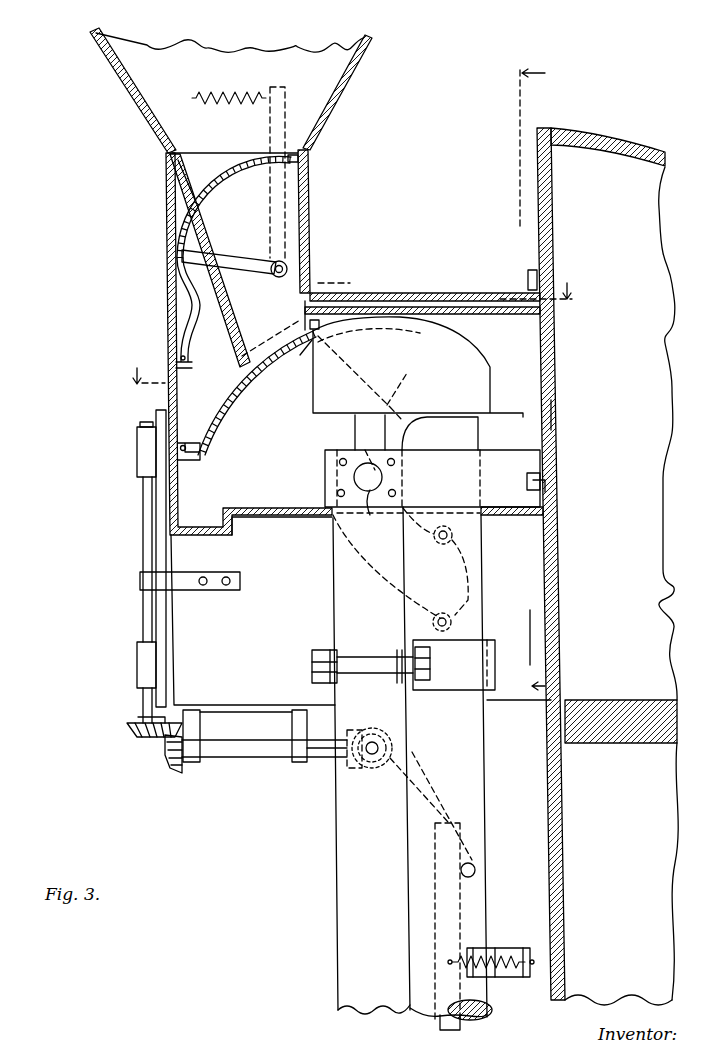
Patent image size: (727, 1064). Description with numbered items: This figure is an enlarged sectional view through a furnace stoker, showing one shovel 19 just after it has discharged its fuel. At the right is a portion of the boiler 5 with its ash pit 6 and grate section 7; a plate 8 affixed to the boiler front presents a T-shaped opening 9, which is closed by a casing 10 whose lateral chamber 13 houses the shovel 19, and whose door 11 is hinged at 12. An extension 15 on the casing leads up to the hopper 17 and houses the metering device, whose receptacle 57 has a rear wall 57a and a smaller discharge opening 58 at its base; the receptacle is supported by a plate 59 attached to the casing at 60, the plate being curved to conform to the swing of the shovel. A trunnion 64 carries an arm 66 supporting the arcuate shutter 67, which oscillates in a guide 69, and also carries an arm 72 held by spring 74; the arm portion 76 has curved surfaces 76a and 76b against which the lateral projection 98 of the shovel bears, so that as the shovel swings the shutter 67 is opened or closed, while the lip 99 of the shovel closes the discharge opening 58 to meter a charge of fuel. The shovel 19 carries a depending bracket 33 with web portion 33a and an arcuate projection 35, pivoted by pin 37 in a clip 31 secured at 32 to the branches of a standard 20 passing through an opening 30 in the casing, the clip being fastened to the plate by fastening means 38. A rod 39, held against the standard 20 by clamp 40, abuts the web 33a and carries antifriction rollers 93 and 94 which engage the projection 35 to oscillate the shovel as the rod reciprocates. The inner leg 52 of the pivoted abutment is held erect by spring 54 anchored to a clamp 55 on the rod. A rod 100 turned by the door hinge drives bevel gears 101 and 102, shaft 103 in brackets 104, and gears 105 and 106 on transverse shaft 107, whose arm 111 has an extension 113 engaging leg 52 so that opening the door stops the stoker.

The boiler 5 is at (626, 150).
The ash pit 6 is at (621, 874).
The grate section 7 is at (615, 705).
The plate 8 is at (560, 608).
The T-shaped opening 9 is at (553, 420).
The casing 10 is at (253, 620).
The door 11 is at (156, 512).
The hinge 12 is at (137, 665).
The lateral chamber 13 is at (553, 366).
The extension 15 is at (312, 192).
The hopper 17 is at (125, 86).
The shovel 19 is at (455, 350).
The standard 20 is at (350, 936).
The opening 30 is at (333, 520).
The clip 31 is at (495, 460).
The fastening 32 is at (396, 468).
The depending bracket 33 is at (356, 436).
The web portion 33a is at (418, 425).
The arcuately shaped projection 35 is at (372, 578).
The pin 37 is at (365, 493).
The fastening means 38 is at (548, 488).
The rod 39 is at (480, 770).
The clamp 40 is at (485, 650).
The inner leg 52 is at (448, 1025).
The spring 54 is at (512, 945).
The clamp 55 is at (513, 980).
The receptacle portion 57 is at (211, 260).
The rear wall 57a is at (196, 160).
The discharge opening 58 is at (268, 362).
The plate 59 is at (430, 300).
The attachment 60 is at (202, 455).
The trunnion 64 is at (290, 270).
The arm 66 is at (252, 276).
The arcuate shutter 67 is at (185, 232).
The guide 69 is at (215, 175).
The arm 72 is at (290, 117).
The spring 74 is at (250, 90).
The arm portion 76 is at (301, 357).
The curved surface 76a is at (407, 383).
The curved surface 76b is at (336, 372).
The antifriction roller 93 is at (455, 538).
The antifriction roller 94 is at (454, 665).
The projection 98 is at (320, 330).
The lip 99 is at (280, 345).
The rod 100 is at (140, 605).
The bevel gear 101 is at (132, 735).
The bevel gear 102 is at (176, 775).
The shaft 103 is at (270, 760).
The bracket 104 is at (200, 730).
The gear 105 is at (355, 735).
The gear 106 is at (393, 740).
The transverse shaft 107 is at (372, 756).
The arm 111 is at (437, 785).
The extension 113 is at (476, 870).